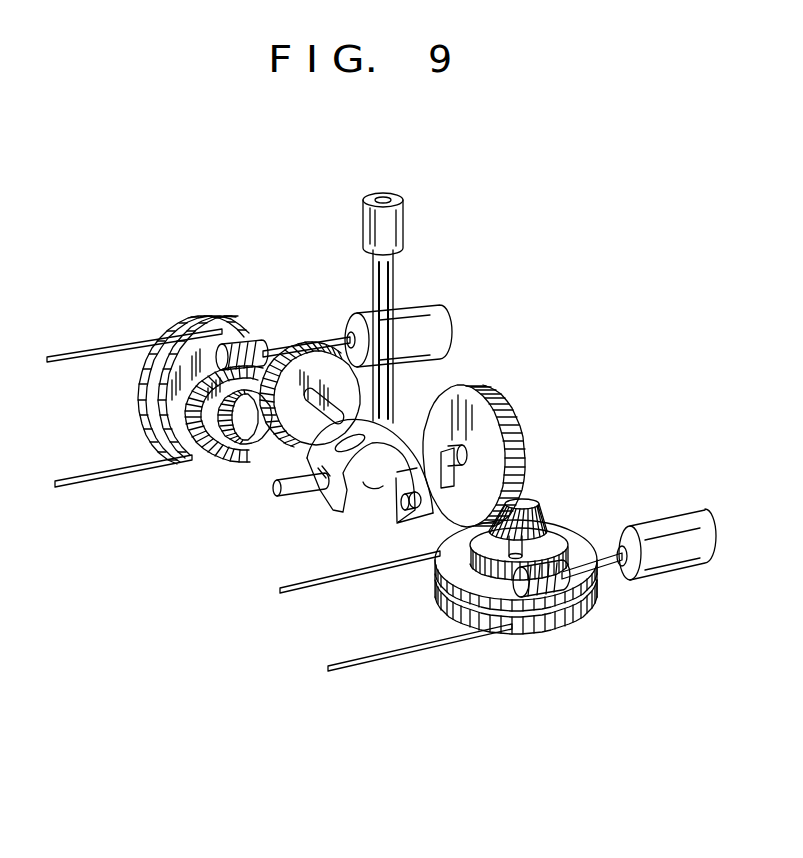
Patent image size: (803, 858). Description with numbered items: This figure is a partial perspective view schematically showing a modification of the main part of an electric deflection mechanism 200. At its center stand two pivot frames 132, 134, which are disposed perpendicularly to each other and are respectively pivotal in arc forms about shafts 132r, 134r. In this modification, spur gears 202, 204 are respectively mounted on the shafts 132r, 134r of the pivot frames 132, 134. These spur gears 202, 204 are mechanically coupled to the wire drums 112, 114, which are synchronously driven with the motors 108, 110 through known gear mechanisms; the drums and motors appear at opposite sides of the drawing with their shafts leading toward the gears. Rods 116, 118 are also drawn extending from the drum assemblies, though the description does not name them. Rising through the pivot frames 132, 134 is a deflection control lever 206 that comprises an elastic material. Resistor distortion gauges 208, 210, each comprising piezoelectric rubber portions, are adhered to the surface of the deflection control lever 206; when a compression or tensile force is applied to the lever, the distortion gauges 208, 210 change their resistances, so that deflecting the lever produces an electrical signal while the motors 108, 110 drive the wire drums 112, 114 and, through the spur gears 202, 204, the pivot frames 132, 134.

The motor 108 is at (430, 331).
The motor 110 is at (665, 556).
The wire drum 112 is at (197, 460).
The wire drum 114 is at (541, 603).
The rod 116 is at (322, 588).
The rod 118 is at (73, 357).
The pivot frame 132 is at (421, 401).
The shaft 132r is at (327, 398).
The pivot frame 134 is at (320, 454).
The shaft 134r is at (277, 494).
The electric deflection mechanism 200 is at (218, 315).
The spur gear 202 is at (295, 353).
The spur gear 204 is at (522, 428).
The deflection control lever 206 is at (397, 260).
The resistor distortion gauge 208 is at (373, 297).
The resistor distortion gauge 210 is at (389, 279).